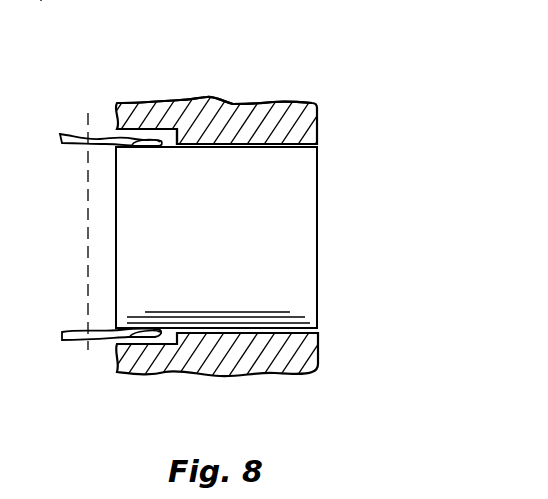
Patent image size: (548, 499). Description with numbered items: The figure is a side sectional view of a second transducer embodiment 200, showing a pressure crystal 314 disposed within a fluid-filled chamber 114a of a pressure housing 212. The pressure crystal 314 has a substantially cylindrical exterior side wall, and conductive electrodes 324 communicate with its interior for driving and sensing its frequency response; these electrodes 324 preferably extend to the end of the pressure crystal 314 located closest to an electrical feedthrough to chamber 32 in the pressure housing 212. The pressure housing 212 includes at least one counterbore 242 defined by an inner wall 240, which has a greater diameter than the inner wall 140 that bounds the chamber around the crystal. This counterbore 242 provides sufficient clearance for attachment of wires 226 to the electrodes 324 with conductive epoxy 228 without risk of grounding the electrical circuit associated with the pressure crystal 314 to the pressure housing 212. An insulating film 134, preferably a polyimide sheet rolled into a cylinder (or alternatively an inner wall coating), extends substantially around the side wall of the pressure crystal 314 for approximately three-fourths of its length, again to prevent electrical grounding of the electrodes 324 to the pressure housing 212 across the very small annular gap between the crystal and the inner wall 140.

The second transducer embodiment 200 is at (294, 51).
The pressure housing 212 is at (281, 117).
The fluid-filled chamber 114a is at (203, 101).
The counterbore 242 is at (133, 129).
The inner wall 240 is at (162, 129).
The inner wall 140 is at (248, 333).
The pressure crystal 314 is at (326, 212).
The insulating film 134 is at (319, 145).
The chamber 32 is at (60, 209).
The wires 226 is at (67, 147).
The conductive epoxy 228 is at (138, 145).
The conductive electrodes 324 is at (41, 0).